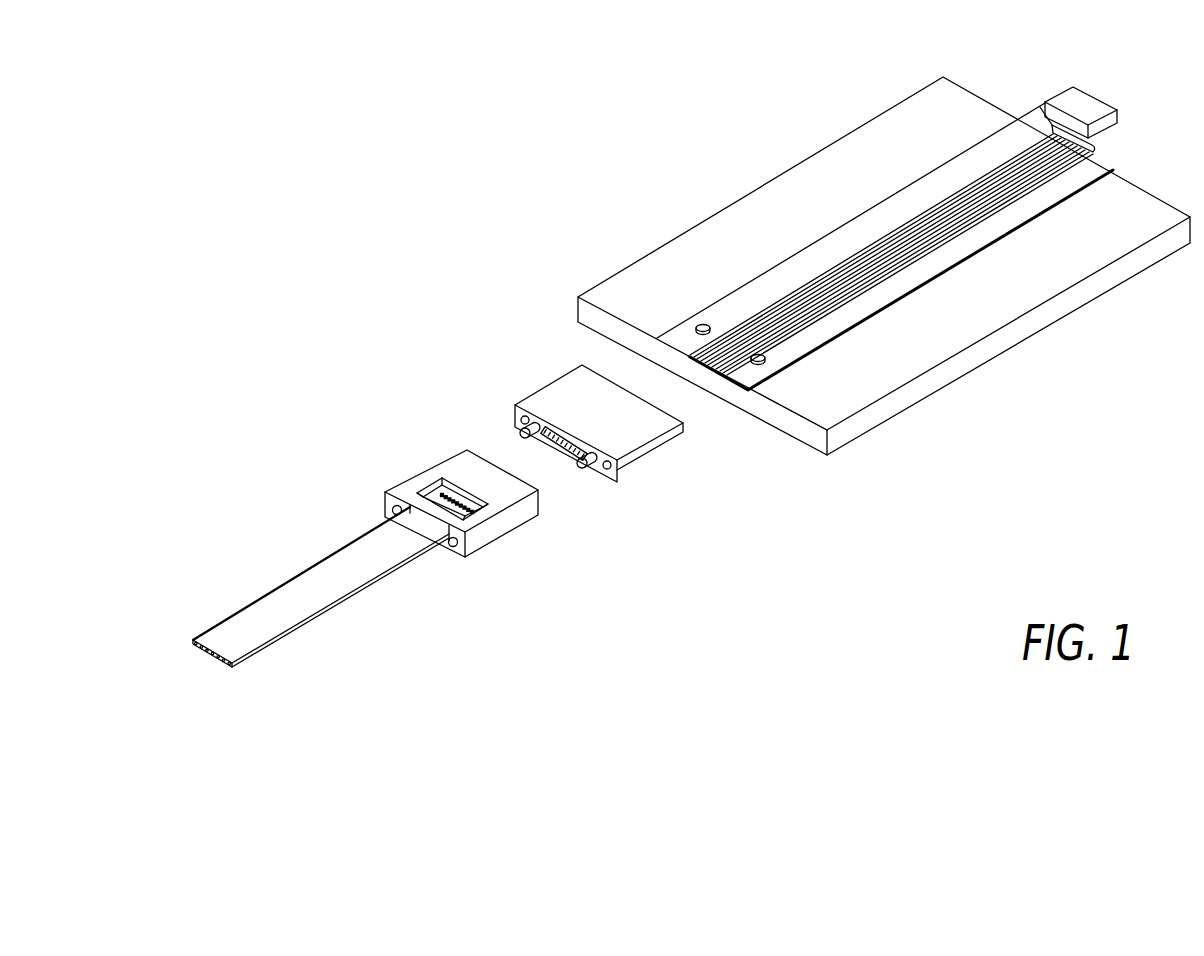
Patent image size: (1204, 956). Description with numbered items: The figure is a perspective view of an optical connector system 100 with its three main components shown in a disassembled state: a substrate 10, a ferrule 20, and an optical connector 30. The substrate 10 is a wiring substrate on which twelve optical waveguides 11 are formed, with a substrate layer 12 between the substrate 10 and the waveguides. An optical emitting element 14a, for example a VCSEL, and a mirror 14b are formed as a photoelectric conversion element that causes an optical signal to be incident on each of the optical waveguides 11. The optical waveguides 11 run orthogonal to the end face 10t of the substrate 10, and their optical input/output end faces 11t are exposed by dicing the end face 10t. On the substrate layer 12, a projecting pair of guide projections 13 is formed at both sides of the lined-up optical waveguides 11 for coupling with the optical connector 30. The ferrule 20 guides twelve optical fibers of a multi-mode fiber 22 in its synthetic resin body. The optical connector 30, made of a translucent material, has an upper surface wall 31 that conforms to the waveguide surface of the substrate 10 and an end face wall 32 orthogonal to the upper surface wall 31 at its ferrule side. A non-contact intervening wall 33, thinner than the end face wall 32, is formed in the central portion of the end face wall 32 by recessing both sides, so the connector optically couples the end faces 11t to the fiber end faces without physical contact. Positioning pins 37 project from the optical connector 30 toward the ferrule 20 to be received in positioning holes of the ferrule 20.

The optical connector system 100 is at (444, 218).
The substrate 10 is at (982, 407).
The end face of the substrate 10t is at (786, 417).
The optical waveguides 11 is at (778, 330).
The end faces of the optical waveguides 11t is at (695, 367).
The substrate layer 12 is at (823, 258).
The guide projections 13 is at (703, 321).
The optical emitting element 14a is at (1072, 100).
The mirror 14b is at (1048, 124).
The ferrule 20 is at (517, 548).
The multi-mode fiber 22 is at (325, 593).
The optical connector 30 is at (593, 434).
The upper surface wall 31 is at (551, 398).
The end face wall 32 is at (618, 476).
The non-contact intervening wall 33 is at (556, 447).
The positioning pin 37 is at (521, 418).